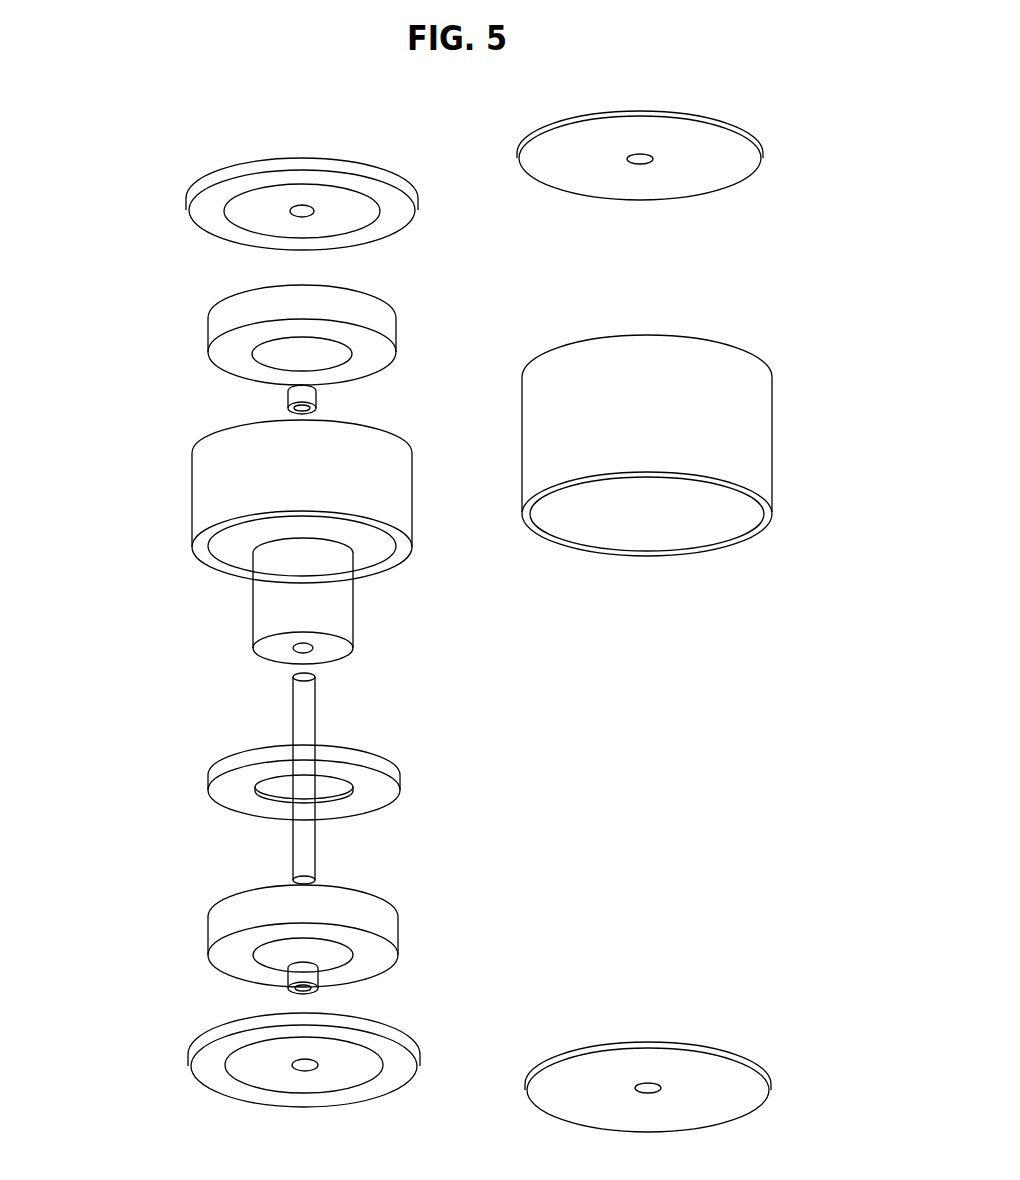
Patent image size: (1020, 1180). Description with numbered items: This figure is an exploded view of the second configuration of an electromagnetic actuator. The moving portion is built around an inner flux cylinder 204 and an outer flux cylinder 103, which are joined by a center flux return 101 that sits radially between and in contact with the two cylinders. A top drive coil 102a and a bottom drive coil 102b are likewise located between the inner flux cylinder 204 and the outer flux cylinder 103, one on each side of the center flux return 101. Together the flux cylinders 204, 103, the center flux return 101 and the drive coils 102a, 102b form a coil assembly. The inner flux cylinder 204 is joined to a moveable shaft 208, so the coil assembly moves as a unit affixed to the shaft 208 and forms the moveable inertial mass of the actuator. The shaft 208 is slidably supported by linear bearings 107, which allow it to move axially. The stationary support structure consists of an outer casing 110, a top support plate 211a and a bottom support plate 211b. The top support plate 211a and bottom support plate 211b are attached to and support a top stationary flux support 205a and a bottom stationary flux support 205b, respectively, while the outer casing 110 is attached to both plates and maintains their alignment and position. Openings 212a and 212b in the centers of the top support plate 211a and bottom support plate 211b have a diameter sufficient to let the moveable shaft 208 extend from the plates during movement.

The center flux return 101 is at (375, 778).
The top drive coil 102a is at (350, 292).
The bottom drive coil 102b is at (370, 944).
The outer flux cylinder 103 is at (230, 460).
The linear bearings 107 is at (292, 392).
The outer casing 110 is at (665, 532).
The inner flux cylinder 204 is at (278, 577).
The top stationary flux support 205a is at (210, 204).
The bottom stationary flux support 205b is at (278, 1098).
The moveable shaft 208 is at (298, 802).
The top support plate 211a is at (648, 190).
The bottom support plate 211b is at (595, 1070).
The opening 212a is at (653, 160).
The opening 212b is at (648, 1085).